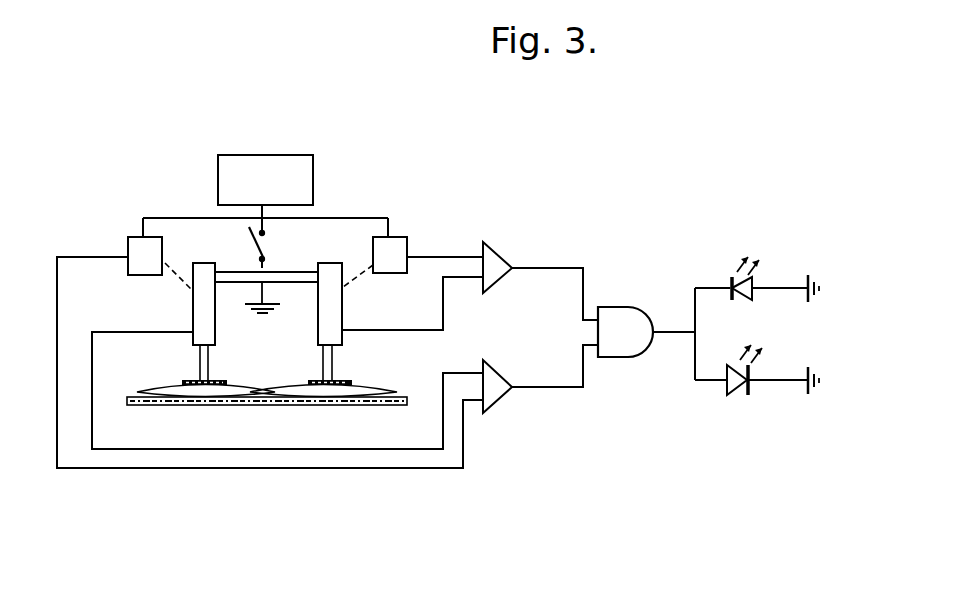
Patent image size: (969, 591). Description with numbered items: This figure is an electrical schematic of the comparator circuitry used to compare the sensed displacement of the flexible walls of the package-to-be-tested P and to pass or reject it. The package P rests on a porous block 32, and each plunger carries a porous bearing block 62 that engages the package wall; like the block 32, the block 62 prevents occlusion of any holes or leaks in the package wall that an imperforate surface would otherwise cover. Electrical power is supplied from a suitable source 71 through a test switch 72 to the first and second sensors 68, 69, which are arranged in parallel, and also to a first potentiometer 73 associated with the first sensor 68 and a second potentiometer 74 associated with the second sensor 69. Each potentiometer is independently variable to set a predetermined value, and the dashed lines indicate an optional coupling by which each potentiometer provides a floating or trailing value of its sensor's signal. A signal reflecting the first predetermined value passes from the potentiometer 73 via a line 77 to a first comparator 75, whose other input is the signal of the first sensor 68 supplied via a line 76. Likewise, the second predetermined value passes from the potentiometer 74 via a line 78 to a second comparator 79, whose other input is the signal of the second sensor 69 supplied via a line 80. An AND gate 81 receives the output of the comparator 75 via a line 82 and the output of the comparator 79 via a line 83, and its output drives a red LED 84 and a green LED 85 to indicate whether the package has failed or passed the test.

The source 71 is at (262, 155).
The test switch 72 is at (264, 244).
The first potentiometer 73 is at (128, 245).
The second potentiometer 74 is at (414, 241).
The first sensor 68 is at (185, 305).
The second sensor 69 is at (347, 305).
The porous bearing block 62 is at (185, 378).
The package-to-be-tested P is at (256, 380).
The porous block 32 is at (245, 407).
The line 76 is at (185, 449).
The line 77 is at (190, 468).
The line 78 is at (432, 257).
The line 80 is at (443, 317).
The second comparator 79 is at (505, 259).
The first comparator 75 is at (500, 376).
The line 83 is at (583, 297).
The line 82 is at (548, 388).
The AND gate 81 is at (632, 306).
The red LED 84 is at (754, 278).
The green LED 85 is at (725, 385).